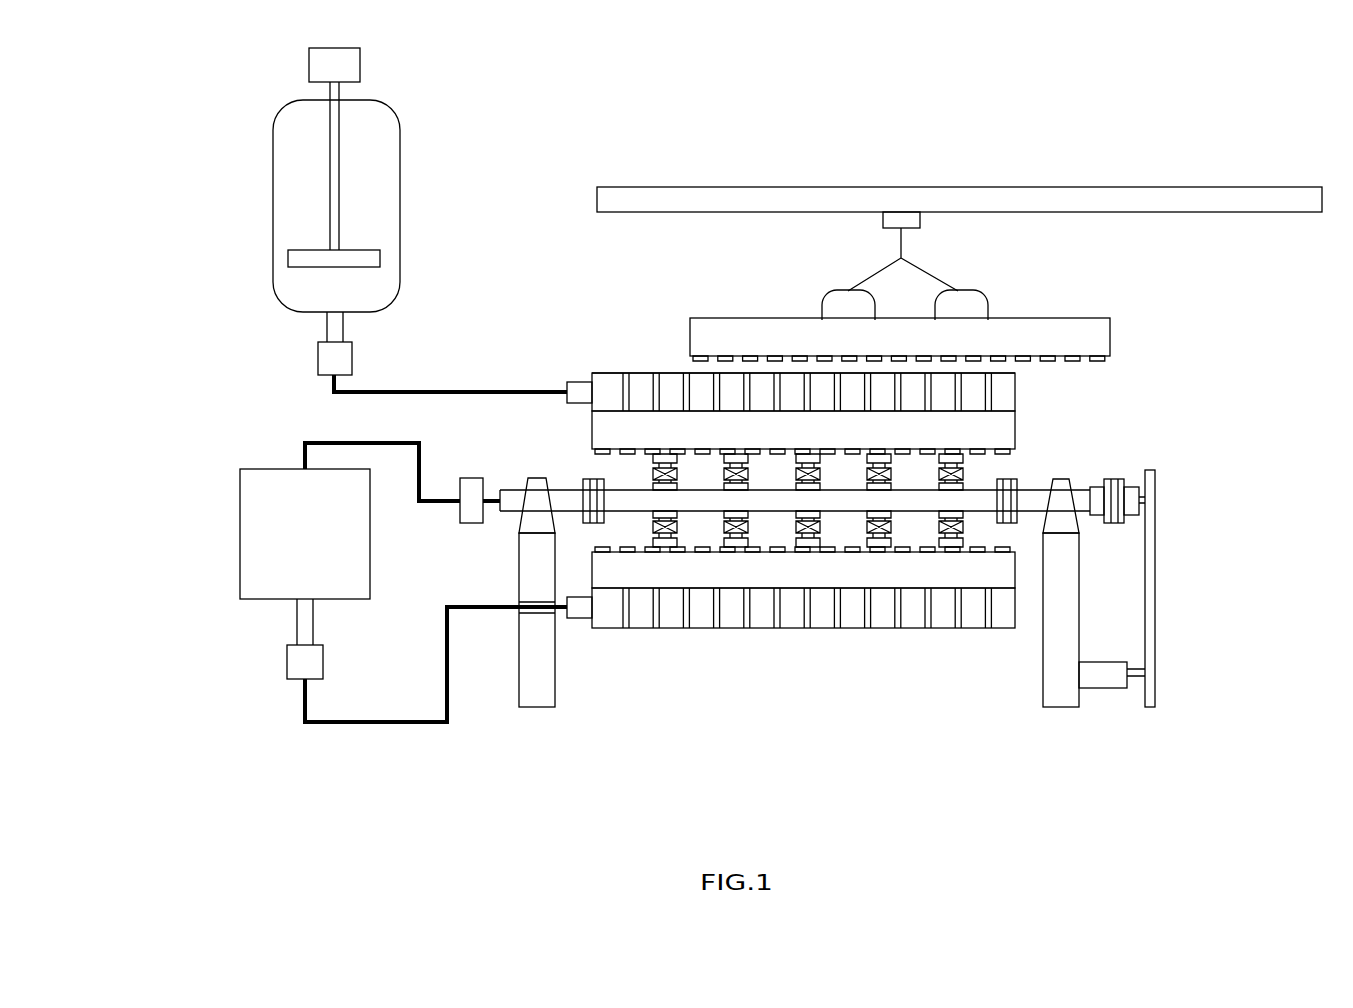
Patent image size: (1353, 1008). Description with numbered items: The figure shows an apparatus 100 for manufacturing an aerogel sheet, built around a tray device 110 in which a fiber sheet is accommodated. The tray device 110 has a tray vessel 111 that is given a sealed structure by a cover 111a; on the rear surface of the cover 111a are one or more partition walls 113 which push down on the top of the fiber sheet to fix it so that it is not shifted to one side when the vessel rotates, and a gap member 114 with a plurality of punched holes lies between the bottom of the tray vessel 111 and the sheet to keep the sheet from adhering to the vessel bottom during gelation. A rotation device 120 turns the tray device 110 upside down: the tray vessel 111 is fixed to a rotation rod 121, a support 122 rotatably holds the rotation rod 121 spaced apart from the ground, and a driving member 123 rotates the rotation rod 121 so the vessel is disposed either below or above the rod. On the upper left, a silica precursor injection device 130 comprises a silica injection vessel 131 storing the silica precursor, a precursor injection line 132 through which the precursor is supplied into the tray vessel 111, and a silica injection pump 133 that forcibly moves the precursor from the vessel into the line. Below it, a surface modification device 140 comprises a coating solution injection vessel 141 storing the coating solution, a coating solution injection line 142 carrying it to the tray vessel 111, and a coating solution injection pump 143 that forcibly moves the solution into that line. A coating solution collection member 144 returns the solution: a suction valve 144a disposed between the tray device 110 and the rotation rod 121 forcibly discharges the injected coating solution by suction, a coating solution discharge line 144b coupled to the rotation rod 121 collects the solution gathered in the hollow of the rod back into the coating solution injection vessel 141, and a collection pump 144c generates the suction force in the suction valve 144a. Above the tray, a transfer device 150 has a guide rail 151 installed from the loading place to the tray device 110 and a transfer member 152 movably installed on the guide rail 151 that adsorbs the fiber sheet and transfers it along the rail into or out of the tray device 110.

The apparatus of manufacturing an aerogel sheet 100 is at (1227, 77).
The tray device 110 is at (1190, 363).
The tray vessel 111 is at (1015, 432).
The cover 111a is at (1015, 373).
The partition walls 113 is at (990, 391).
The gap member 114 is at (1003, 453).
The rotation device 120 is at (1102, 758).
The rotation rod 121 is at (915, 498).
The support 122 is at (1057, 683).
The driving member 123 is at (1093, 683).
The silica precursor injection device 130 is at (495, 204).
The silica injection vessel 131 is at (400, 203).
The precursor injection line 132 is at (488, 390).
The silica injection pump 133 is at (347, 353).
The surface modification device 140 is at (197, 717).
The coating solution injection vessel 141 is at (240, 533).
The coating solution injection line 142 is at (305, 712).
The coating solution injection pump 143 is at (287, 660).
The coating solution collection member 144 is at (172, 397).
The suction valve 144a is at (655, 473).
The coating solution discharge line 144b is at (305, 447).
The collection pump 144c is at (468, 490).
The transfer device 150 is at (1010, 123).
The guide rail 151 is at (1000, 198).
The transfer member 152 is at (900, 220).